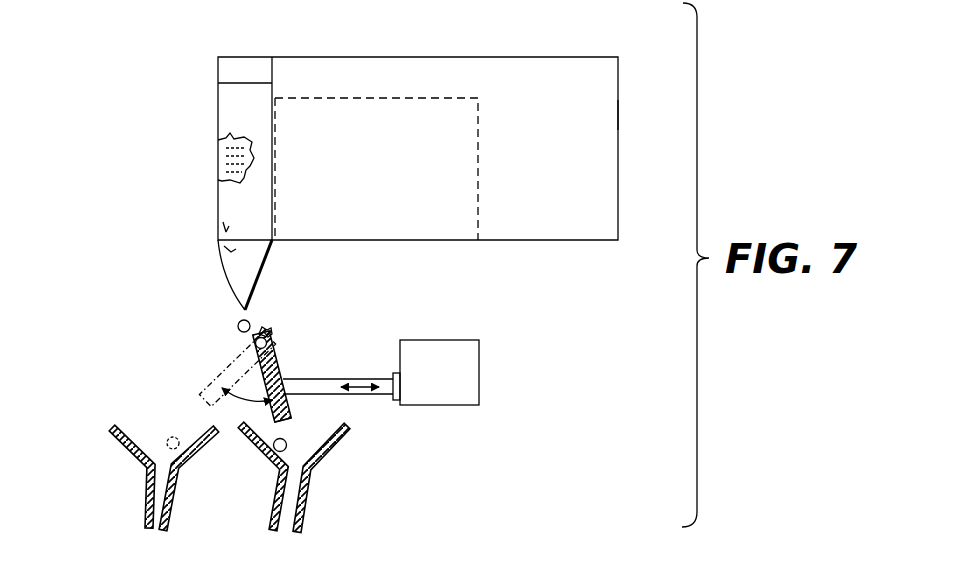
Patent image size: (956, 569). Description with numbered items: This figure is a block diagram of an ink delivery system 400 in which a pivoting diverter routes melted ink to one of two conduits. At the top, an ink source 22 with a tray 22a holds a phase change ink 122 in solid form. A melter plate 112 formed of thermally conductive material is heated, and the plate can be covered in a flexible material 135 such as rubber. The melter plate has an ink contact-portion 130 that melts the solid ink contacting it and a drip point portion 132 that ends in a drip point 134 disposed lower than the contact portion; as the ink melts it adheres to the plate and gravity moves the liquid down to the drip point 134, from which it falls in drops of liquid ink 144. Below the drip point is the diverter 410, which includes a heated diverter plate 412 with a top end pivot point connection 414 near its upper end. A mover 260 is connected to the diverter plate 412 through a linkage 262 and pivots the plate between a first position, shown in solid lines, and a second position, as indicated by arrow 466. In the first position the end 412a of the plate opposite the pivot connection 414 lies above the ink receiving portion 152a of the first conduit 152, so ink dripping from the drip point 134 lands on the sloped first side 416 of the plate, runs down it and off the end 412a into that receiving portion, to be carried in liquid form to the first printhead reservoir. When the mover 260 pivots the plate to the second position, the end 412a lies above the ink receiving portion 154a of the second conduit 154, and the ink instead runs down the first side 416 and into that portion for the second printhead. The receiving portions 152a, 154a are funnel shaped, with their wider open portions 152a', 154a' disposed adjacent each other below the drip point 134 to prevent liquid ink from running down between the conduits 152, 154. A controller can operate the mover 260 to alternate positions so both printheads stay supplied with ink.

The ink delivery system 400 is at (110, 32).
The ink source 22 is at (590, 55).
The tray 22a is at (618, 110).
The melter plate 112 is at (245, 76).
The cyan solid ink 122 is at (394, 180).
The ink contact-portion 130 is at (218, 154).
The flexible material 135 is at (233, 251).
The drip point portion 132 is at (228, 272).
The drip point 134 is at (252, 308).
The drops of liquid ink 144 is at (237, 321).
The diverter 410 is at (152, 372).
The first side of the diverter plate 416 is at (221, 366).
The linkage 262 is at (333, 379).
The mover 260 is at (458, 383).
The heated diverter plate 412 is at (283, 373).
The top end pivot point connection 414 is at (268, 333).
The end of the diverter plate 412a is at (284, 423).
The arrow 466 is at (237, 397).
The second conduit 154 is at (130, 482).
The ink receiving portion of the second conduit 154a is at (98, 476).
The open portion of the second conduit 154a' is at (96, 415).
The first conduit 152 is at (328, 478).
The ink receiving portion of the first conduit 152a is at (356, 477).
The open portion of the first conduit 152a' is at (377, 434).